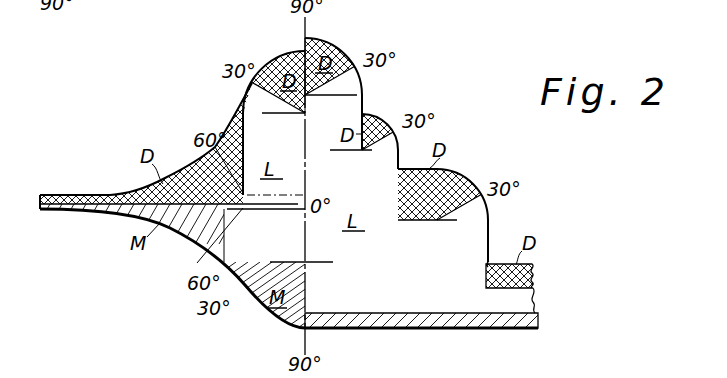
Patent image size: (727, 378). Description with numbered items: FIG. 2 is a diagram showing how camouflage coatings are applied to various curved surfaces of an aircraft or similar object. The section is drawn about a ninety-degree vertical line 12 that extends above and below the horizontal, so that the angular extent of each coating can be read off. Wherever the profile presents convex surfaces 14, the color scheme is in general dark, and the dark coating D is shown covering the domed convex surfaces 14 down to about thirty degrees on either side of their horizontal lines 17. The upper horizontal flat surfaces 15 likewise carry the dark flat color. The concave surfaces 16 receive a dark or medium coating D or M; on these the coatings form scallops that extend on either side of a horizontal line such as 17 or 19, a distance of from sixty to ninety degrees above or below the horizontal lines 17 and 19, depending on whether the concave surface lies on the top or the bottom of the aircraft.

The vertical line 12 is at (303, 340).
The convex surfaces 14 is at (268, 62).
The upper horizontal flat surfaces 15 is at (396, 170).
The concave surfaces 16 is at (183, 172).
The horizontal line 17 is at (266, 114).
The horizontal line 19 is at (287, 210).